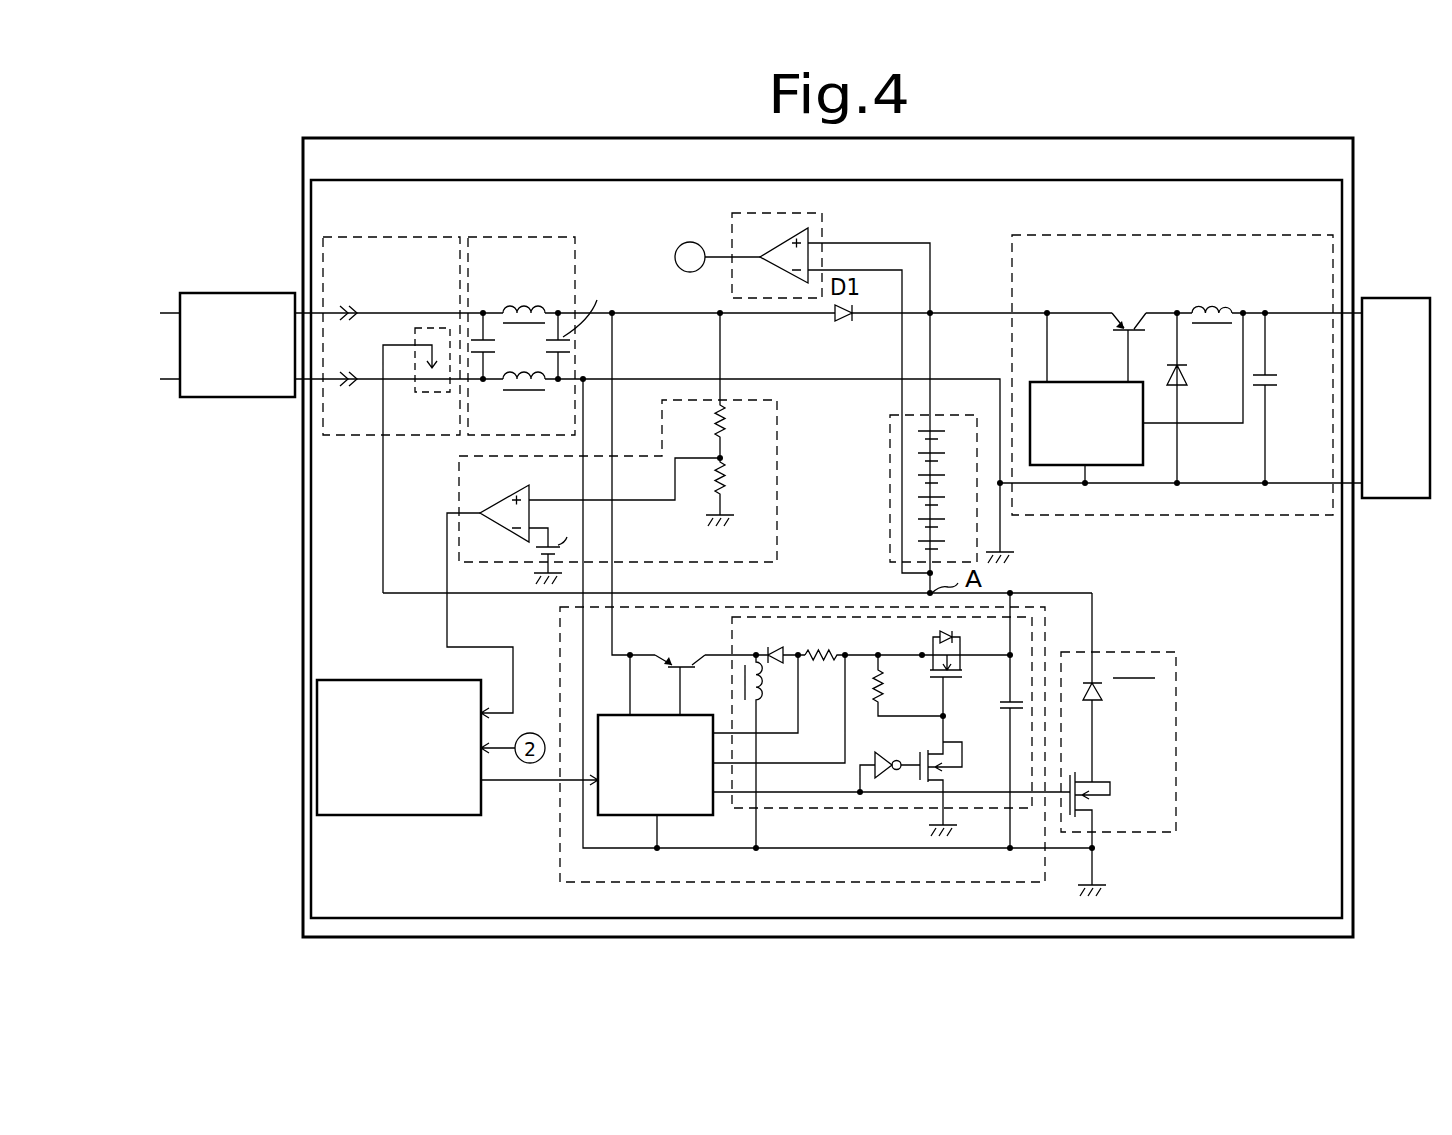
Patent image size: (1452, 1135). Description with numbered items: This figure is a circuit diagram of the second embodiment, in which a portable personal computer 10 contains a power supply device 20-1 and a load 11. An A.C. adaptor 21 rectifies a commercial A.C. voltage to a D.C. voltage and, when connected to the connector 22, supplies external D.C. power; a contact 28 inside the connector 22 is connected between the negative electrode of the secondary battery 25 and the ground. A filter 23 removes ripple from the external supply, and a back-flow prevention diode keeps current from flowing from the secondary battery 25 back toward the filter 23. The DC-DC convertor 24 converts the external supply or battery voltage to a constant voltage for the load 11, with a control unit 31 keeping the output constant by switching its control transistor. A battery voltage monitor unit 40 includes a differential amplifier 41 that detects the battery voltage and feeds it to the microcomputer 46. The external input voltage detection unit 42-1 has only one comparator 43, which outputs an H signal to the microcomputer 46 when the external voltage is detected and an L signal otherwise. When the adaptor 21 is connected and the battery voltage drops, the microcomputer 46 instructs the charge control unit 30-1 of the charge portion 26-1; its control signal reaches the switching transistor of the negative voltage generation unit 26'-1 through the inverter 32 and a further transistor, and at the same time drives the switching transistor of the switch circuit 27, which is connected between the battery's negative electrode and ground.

The portable personal computer 10 is at (1125, 138).
The power supply device 20-1 is at (1103, 182).
The A.C. adaptor 21 is at (228, 292).
The connector 22 is at (391, 415).
The filter 23 is at (573, 245).
The DC-DC convertor 24 is at (1172, 355).
The secondary battery 25 is at (890, 457).
The charge portion 26-1 is at (815, 751).
The negative voltage generation unit 26'-1 is at (891, 720).
The switch circuit 27 is at (1177, 687).
The contact 28 is at (443, 395).
The charge control unit 30-1 is at (598, 803).
The control unit 31 is at (1068, 380).
The inverter 32 is at (880, 758).
The battery voltage monitor unit 40 is at (802, 391).
The differential amplifier 41 is at (785, 243).
The external input voltage detection unit 42-1 is at (583, 515).
The comparator 43 is at (498, 503).
The microcomputer 46 is at (350, 680).
The load 11 is at (1397, 297).